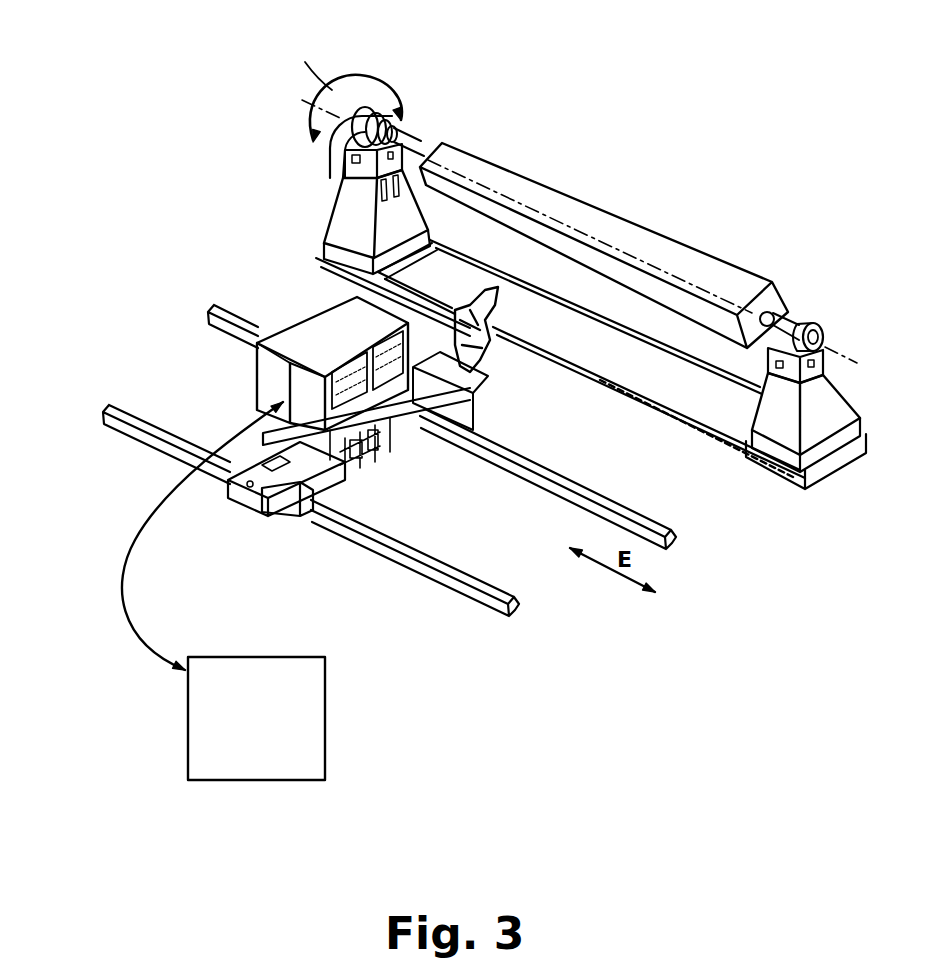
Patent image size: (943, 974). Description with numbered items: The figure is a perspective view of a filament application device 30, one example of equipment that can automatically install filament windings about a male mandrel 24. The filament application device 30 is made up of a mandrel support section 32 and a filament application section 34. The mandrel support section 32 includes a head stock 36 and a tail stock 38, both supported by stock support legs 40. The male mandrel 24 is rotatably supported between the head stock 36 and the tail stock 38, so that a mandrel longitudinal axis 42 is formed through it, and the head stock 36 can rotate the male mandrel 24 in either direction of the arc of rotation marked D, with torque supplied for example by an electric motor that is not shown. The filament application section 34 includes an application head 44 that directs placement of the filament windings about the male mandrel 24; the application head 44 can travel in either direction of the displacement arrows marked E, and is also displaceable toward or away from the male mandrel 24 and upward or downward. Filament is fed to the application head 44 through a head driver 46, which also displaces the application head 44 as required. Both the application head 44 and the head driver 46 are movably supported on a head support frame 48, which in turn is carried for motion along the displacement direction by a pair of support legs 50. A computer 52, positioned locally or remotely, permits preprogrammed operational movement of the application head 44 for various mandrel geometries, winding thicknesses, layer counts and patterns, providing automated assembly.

The male mandrel 24 is at (472, 160).
The filament application device 30 is at (140, 130).
The mandrel support section 32 is at (305, 125).
The filament application section 34 is at (57, 265).
The head stock 36 is at (345, 207).
The tail stock 38 is at (815, 423).
The stock support legs 40 is at (560, 359).
The mandrel longitudinal axis 42 is at (302, 100).
The application head 44 is at (450, 306).
The head driver 46 is at (310, 500).
The head support frame 48 is at (265, 478).
The support legs 50 is at (630, 514).
The computer 52 is at (292, 703).